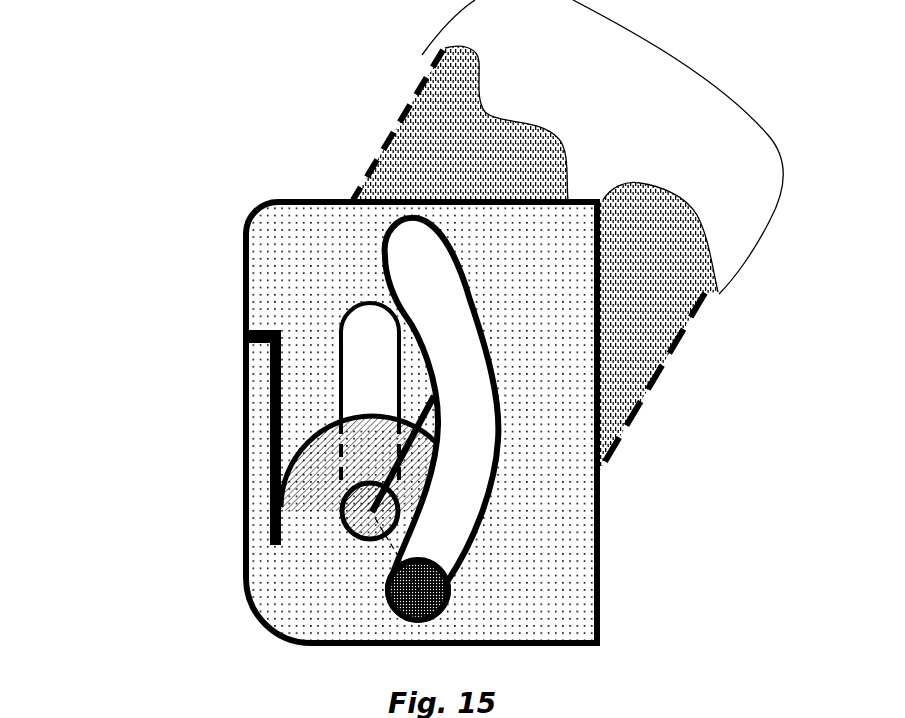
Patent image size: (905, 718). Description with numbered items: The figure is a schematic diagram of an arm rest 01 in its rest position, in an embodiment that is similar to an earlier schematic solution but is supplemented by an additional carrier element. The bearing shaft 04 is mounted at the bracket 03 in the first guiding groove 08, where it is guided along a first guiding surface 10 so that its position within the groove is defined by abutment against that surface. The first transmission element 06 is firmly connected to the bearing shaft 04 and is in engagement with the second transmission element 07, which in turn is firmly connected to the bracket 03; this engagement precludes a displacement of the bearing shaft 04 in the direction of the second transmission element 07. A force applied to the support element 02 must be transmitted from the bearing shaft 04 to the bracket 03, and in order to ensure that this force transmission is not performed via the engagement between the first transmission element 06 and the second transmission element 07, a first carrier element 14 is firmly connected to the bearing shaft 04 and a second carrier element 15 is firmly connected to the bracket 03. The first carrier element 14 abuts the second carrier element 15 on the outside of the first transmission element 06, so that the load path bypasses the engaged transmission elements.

The arm rest 01 is at (124, 184).
The support element 02 is at (434, 144).
The bracket 03 is at (560, 540).
The bearing shaft 04 is at (362, 513).
The first transmission element 06 is at (345, 492).
The second transmission element 07 is at (274, 372).
The first guiding groove 08 is at (367, 350).
The first guiding surface 10 is at (397, 362).
The first carrier element 14 is at (314, 419).
The second carrier element 15 is at (263, 327).